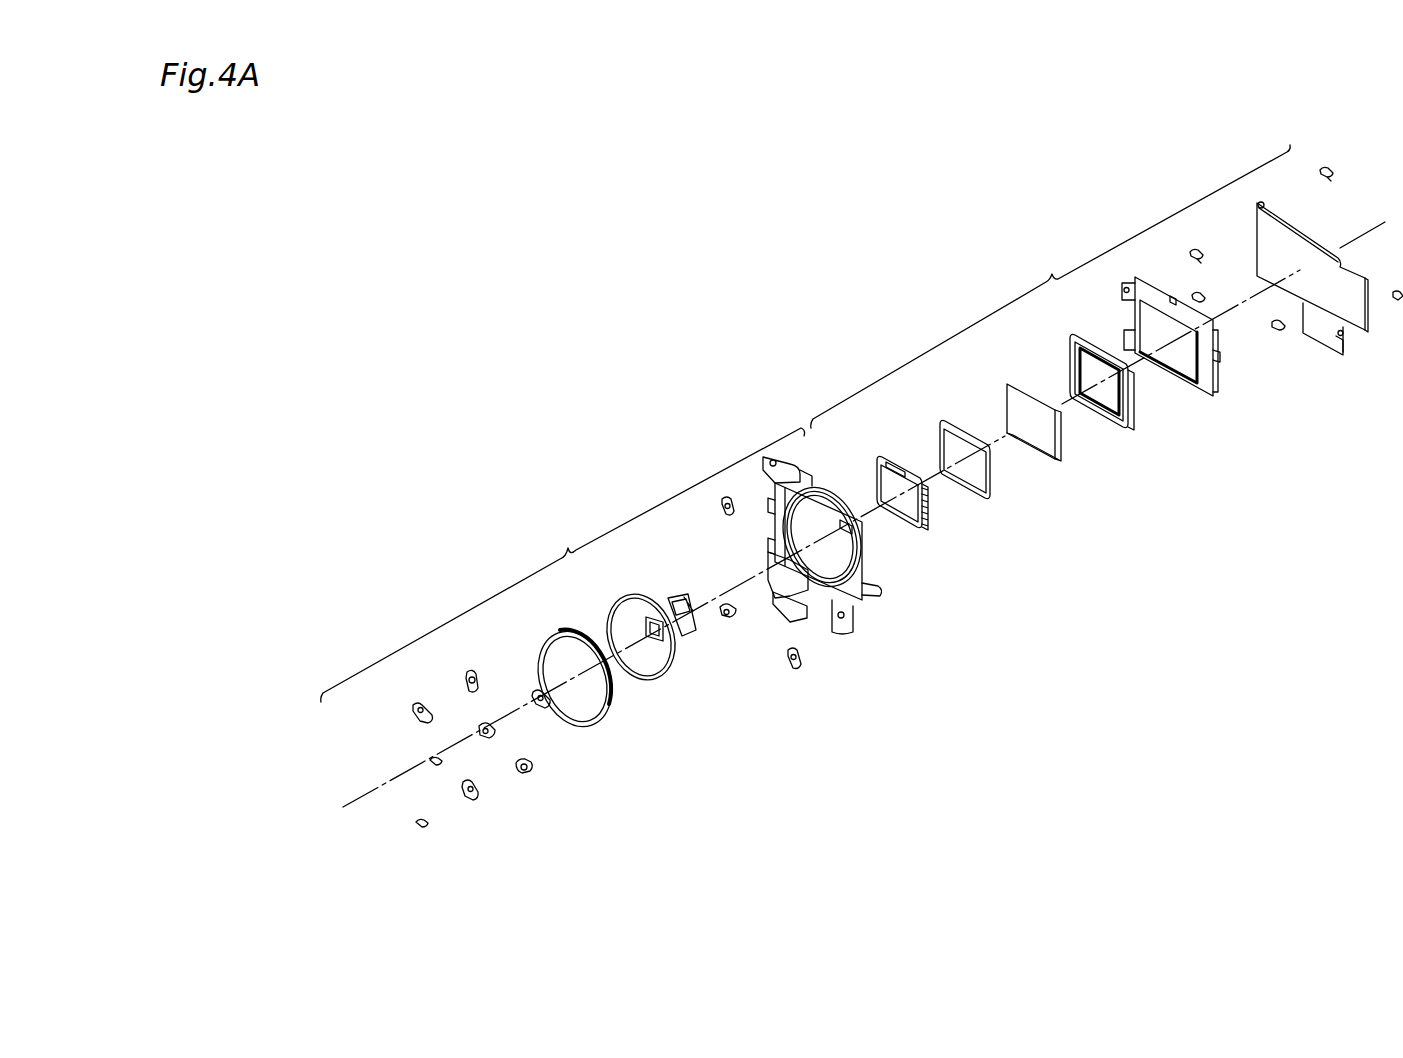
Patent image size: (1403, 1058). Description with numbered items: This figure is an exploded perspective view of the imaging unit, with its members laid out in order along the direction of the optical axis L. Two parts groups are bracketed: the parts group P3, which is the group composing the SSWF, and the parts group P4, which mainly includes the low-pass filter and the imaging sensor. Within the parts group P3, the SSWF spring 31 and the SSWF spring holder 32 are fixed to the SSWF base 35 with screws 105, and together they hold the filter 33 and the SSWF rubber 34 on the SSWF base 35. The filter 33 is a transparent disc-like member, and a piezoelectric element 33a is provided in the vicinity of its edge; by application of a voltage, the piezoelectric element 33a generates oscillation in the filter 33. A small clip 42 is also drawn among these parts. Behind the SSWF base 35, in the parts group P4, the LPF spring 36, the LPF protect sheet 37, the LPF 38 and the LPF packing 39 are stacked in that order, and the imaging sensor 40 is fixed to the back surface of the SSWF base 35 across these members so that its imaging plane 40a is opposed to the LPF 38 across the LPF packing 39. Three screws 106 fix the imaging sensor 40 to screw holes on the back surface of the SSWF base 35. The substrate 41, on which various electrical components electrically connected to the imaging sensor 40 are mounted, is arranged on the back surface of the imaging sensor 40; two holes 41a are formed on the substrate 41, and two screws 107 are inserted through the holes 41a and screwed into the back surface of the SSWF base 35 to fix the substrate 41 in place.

The SSWF spring 31 is at (481, 804).
The SSWF spring holder 32 is at (527, 773).
The filter 33 is at (597, 723).
The piezoelectric element 33a is at (577, 633).
The SSWF rubber 34 is at (668, 683).
The SSWF base 35 is at (853, 614).
The LPF spring 36 is at (929, 530).
The LPF protect sheet 37 is at (988, 496).
The LPF 38 is at (1058, 457).
The LPF packing 39 is at (1124, 430).
The imaging sensor 40 is at (1197, 354).
The imaging plane 40a is at (1182, 352).
The substrate 41 is at (1326, 288).
The holes 41a is at (1261, 204).
The clip member 42 is at (798, 662).
The screws 105 is at (428, 824).
The screws 106 is at (1204, 268).
The screws 107 is at (1329, 190).
The optical axis L is at (362, 788).
The parts group P3 is at (563, 565).
The parts group P4 is at (1050, 286).